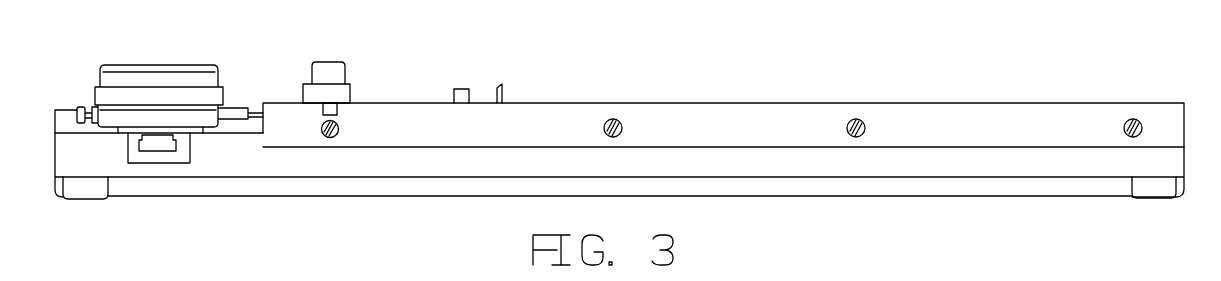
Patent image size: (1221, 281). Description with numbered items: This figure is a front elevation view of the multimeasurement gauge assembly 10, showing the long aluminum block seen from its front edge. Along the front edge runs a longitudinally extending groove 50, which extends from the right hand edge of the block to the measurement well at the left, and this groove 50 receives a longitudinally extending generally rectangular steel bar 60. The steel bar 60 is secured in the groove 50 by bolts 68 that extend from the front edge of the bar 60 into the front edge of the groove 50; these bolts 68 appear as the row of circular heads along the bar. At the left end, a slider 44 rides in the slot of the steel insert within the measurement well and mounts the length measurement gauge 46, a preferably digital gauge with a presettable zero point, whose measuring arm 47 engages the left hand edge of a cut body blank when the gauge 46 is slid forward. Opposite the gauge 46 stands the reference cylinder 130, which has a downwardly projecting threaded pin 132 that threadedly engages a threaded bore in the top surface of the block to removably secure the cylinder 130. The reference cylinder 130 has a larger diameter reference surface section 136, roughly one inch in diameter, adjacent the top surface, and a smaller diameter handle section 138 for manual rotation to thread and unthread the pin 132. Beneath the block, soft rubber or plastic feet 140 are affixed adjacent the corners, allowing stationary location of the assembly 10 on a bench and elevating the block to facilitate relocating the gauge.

The multimeasurement gauge assembly 10 is at (1000, 103).
The slider 44 is at (177, 143).
The length measurement gauge 46 is at (143, 65).
The measuring arm 47 is at (256, 108).
The longitudinally extending groove 50 is at (997, 148).
The steel bar 60 is at (847, 122).
The bolts 68 is at (330, 138).
The reference cylinder 130 is at (335, 89).
The threaded pin 132 is at (337, 110).
The reference surface section 136 is at (303, 87).
The handle section 138 is at (346, 66).
The feet 140 is at (83, 200).